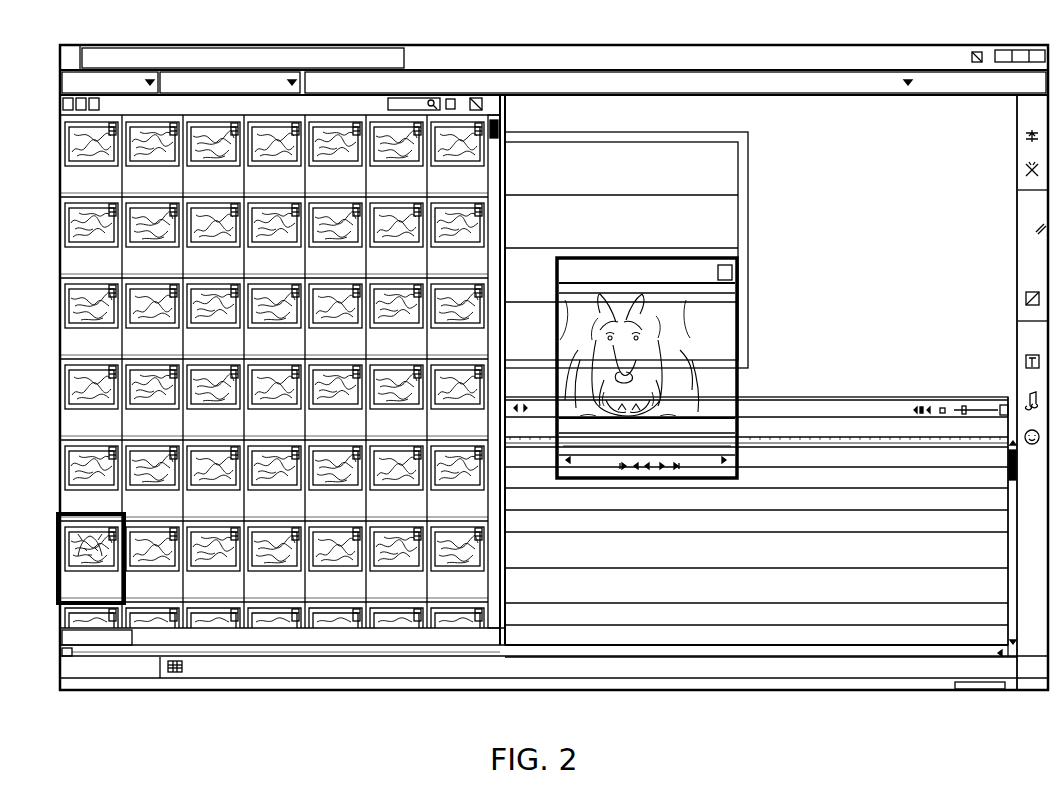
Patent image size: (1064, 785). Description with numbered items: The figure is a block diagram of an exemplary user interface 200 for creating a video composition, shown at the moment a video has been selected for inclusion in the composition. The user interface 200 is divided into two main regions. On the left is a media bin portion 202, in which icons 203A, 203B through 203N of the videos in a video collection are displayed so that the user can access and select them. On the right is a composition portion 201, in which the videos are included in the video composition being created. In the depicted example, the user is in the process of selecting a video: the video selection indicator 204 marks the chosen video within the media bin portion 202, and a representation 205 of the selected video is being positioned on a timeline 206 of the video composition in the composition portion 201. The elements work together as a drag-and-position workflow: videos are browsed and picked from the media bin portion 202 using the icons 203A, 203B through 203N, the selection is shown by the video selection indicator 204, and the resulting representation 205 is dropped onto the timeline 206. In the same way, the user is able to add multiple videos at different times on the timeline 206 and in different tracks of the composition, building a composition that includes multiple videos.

The user interface 200 is at (328, 36).
The composition portion 201 is at (776, 425).
The media bin portion 202 is at (278, 383).
The icon 203A is at (66, 138).
The icon 203B is at (157, 130).
The icon 203N is at (426, 663).
The video selection indicator 204 is at (93, 606).
The representation 205 is at (703, 258).
The timeline 206 is at (826, 417).